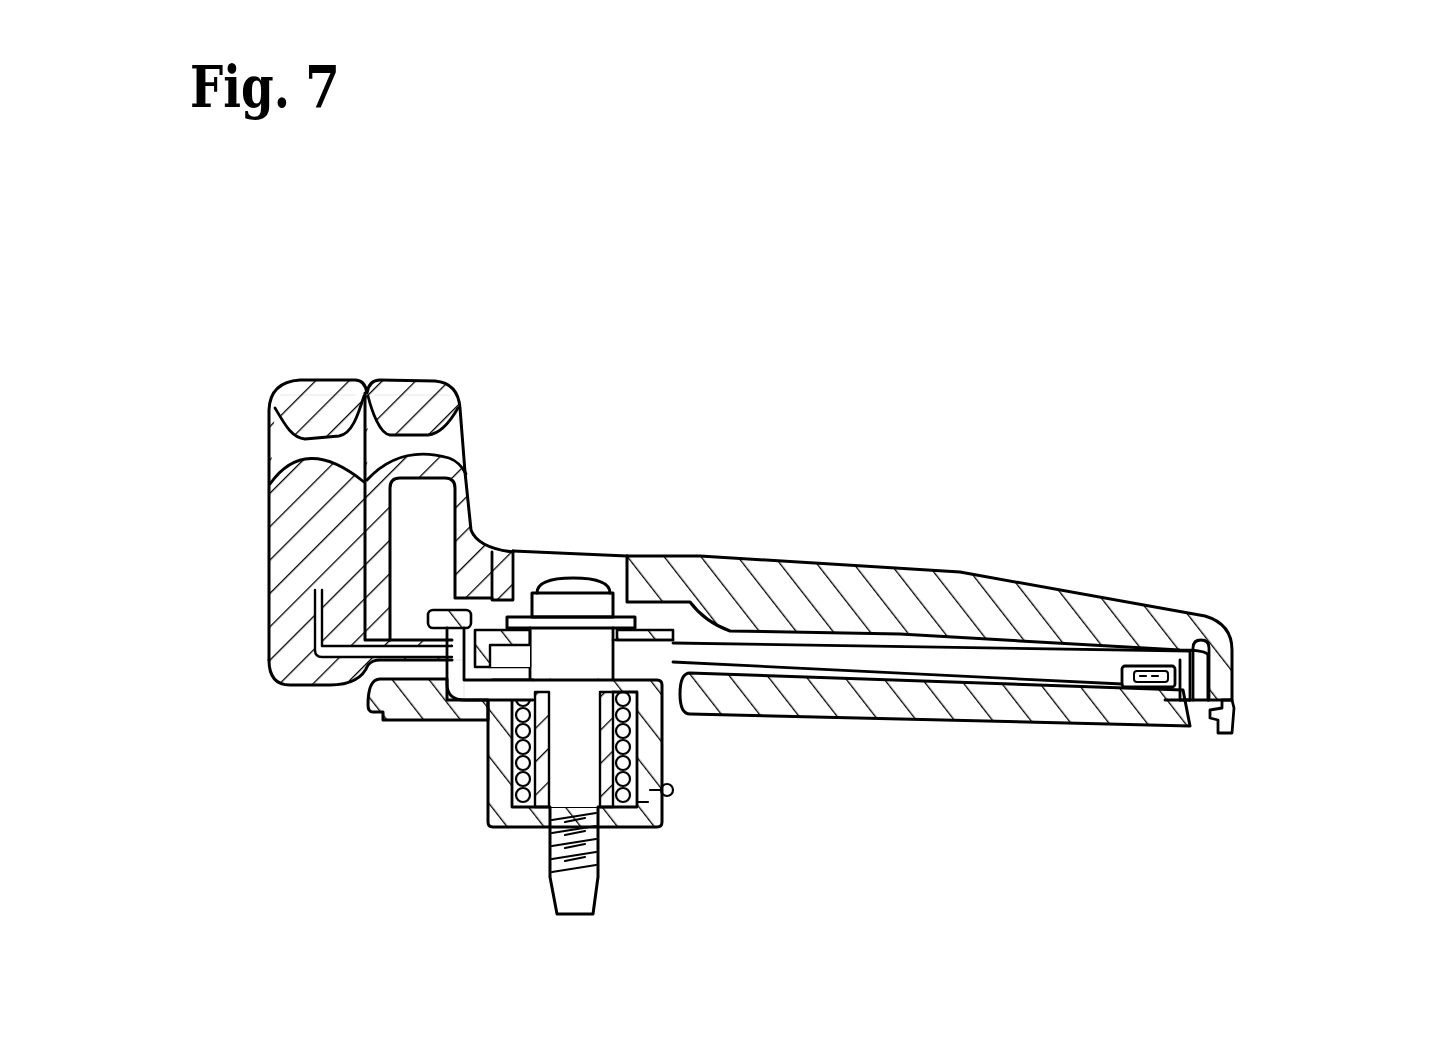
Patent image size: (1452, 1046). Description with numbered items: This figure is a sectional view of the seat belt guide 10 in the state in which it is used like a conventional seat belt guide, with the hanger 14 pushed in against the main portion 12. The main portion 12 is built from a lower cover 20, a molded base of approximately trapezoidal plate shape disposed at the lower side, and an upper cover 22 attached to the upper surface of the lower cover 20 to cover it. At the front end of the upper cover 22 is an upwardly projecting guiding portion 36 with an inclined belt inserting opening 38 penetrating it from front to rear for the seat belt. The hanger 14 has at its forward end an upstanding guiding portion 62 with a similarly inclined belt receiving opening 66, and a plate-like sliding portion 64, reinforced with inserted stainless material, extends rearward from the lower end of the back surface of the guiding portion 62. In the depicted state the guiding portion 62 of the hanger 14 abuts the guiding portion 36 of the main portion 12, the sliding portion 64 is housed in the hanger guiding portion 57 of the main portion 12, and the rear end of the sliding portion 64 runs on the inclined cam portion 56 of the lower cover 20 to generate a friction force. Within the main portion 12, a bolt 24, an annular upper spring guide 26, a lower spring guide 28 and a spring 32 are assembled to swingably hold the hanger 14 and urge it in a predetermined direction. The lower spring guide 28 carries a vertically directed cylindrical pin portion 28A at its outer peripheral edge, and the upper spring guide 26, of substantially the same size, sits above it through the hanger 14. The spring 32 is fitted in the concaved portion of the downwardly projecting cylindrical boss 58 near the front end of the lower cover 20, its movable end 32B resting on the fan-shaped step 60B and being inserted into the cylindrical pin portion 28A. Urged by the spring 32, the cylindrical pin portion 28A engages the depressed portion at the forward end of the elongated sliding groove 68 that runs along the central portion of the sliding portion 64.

The seat belt guide 10 is at (714, 268).
The main portion 12 is at (956, 653).
The hanger 14 is at (255, 546).
The lower cover 20 is at (1268, 720).
The upper cover 22 is at (1216, 617).
The bolt 24 is at (597, 580).
The upper spring guide 26 is at (663, 630).
The lower spring guide 28 is at (680, 717).
The cylindrical pin portion 28A is at (493, 600).
The spring 32 is at (633, 755).
The movable end 32B is at (458, 718).
The guiding portion 36 is at (427, 392).
The belt inserting opening 38 is at (458, 412).
The inclined cam portion 56 is at (1155, 705).
The hanger guiding portion 57 is at (699, 630).
The boss 58 is at (487, 785).
The step 60B is at (425, 719).
The guiding portion 62 is at (318, 396).
The sliding portion 64 is at (1105, 660).
The belt receiving opening 66 is at (270, 420).
The sliding groove 68 is at (1035, 665).